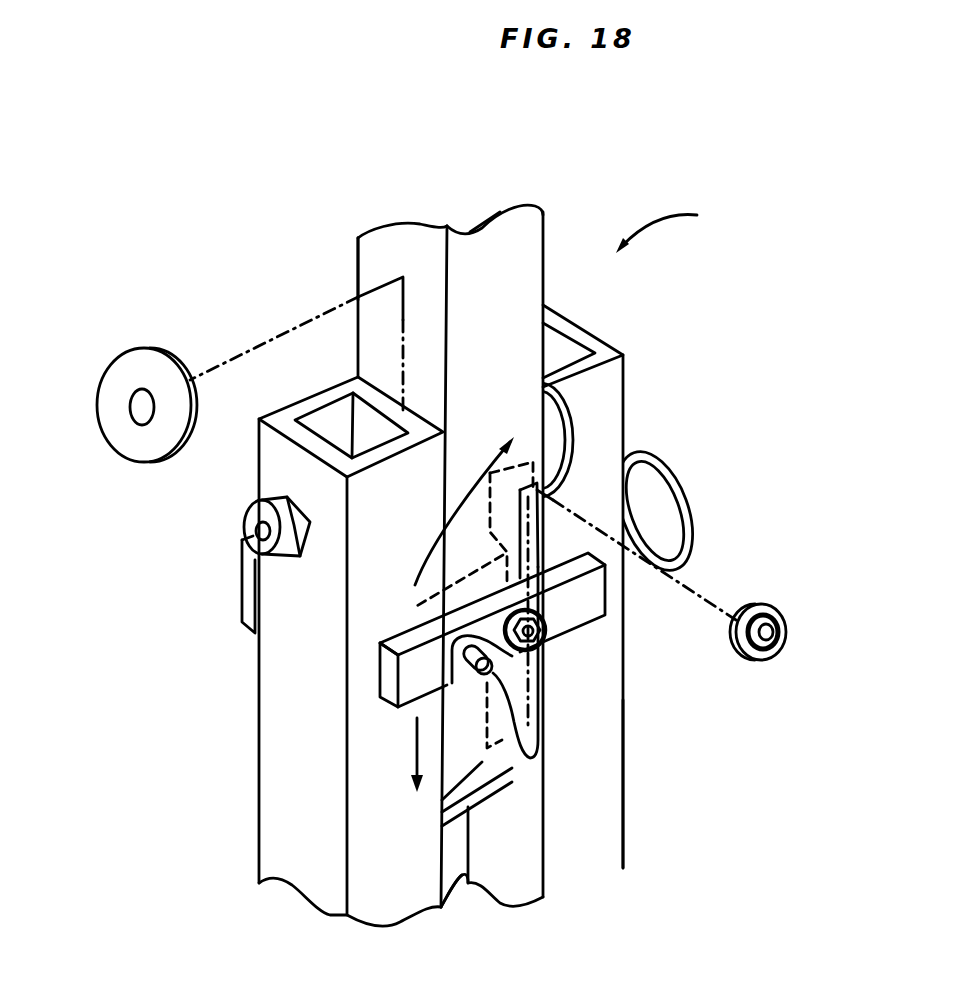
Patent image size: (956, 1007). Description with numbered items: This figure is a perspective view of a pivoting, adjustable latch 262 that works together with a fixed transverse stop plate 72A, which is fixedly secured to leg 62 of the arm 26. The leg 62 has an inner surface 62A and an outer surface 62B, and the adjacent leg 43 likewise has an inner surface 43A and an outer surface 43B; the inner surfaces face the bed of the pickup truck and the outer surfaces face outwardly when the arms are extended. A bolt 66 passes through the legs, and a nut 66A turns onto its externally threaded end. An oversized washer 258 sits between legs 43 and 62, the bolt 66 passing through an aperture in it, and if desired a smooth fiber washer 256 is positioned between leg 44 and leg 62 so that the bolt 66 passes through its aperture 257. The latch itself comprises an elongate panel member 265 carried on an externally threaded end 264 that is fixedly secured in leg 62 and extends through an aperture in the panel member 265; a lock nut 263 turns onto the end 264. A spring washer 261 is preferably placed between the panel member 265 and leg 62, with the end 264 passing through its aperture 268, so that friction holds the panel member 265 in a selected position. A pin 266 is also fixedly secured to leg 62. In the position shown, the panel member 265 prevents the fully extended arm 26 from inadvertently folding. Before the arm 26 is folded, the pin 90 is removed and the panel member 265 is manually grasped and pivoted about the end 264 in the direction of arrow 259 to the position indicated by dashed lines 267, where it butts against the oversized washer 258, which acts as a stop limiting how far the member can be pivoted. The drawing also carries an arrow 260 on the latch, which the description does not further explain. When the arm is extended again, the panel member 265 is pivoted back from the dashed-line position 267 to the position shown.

The arm 26 is at (677, 227).
The leg 43 is at (607, 401).
The inner surface 43A is at (448, 885).
The outer surface 43B is at (600, 856).
The leg 44 is at (260, 775).
The leg 62 is at (527, 237).
The inner surface 62A is at (358, 240).
The outer surface 62B is at (482, 234).
The bolt 66 is at (282, 485).
The nut 66A is at (245, 514).
The stop plate 72A is at (247, 571).
The pin 90 is at (688, 508).
The smooth fiber washer 256 is at (113, 383).
The aperture 257 is at (132, 423).
The oversized washer 258 is at (544, 415).
The arrow 259 is at (443, 537).
The downward movement arrow 260 is at (386, 755).
The spring washer 261 is at (778, 624).
The pivoting adjustable latch 262 is at (365, 652).
The lock nut 263 is at (548, 617).
The externally threaded end 264 is at (547, 637).
The elongate panel member 265 is at (392, 678).
The pin 266 is at (545, 757).
The dashed lines 267 is at (443, 598).
The aperture 268 is at (780, 646).